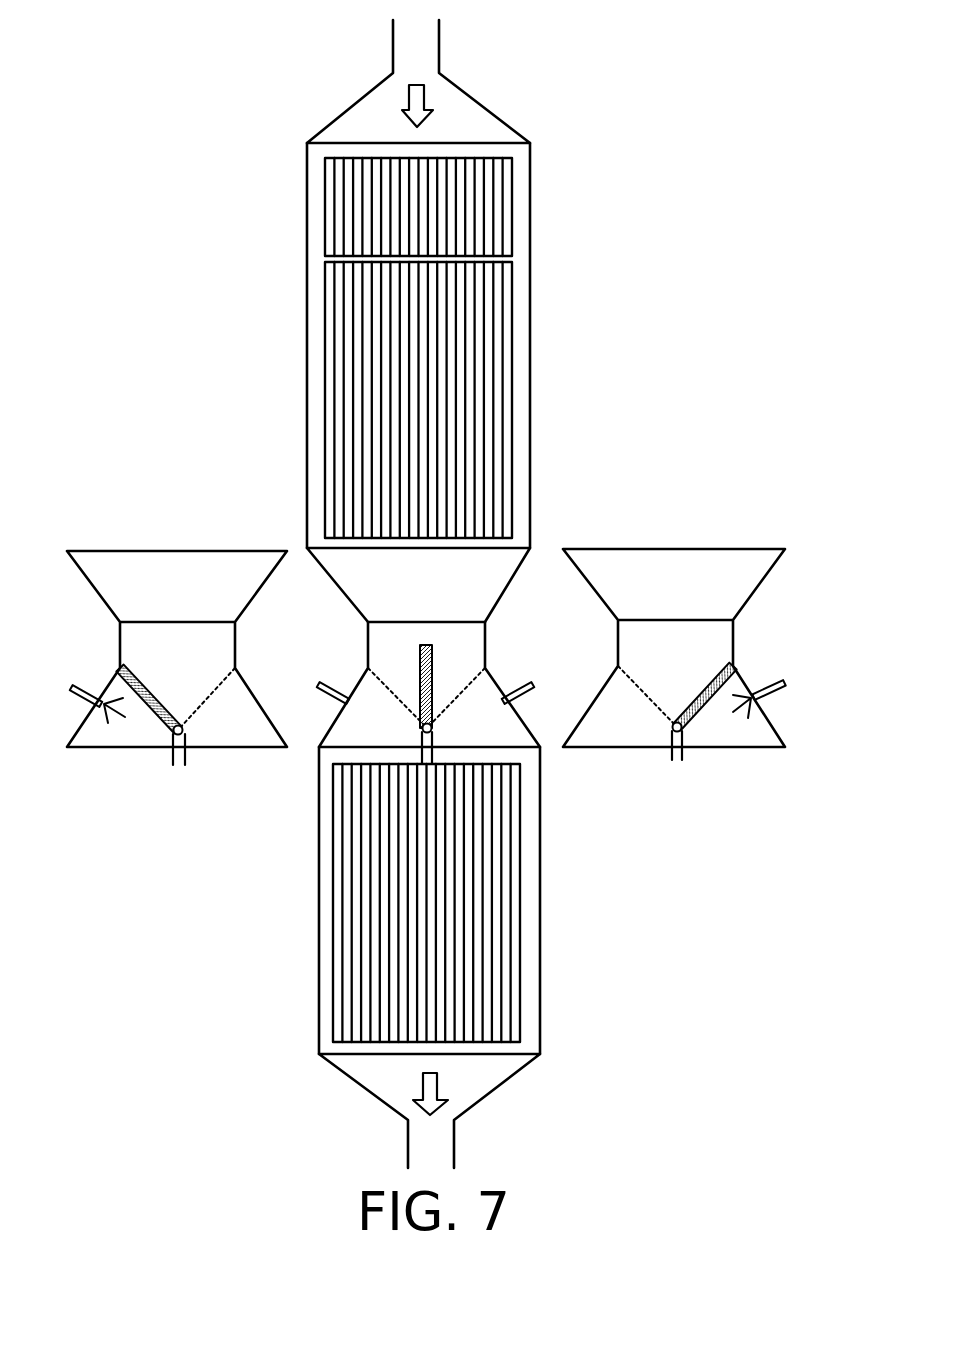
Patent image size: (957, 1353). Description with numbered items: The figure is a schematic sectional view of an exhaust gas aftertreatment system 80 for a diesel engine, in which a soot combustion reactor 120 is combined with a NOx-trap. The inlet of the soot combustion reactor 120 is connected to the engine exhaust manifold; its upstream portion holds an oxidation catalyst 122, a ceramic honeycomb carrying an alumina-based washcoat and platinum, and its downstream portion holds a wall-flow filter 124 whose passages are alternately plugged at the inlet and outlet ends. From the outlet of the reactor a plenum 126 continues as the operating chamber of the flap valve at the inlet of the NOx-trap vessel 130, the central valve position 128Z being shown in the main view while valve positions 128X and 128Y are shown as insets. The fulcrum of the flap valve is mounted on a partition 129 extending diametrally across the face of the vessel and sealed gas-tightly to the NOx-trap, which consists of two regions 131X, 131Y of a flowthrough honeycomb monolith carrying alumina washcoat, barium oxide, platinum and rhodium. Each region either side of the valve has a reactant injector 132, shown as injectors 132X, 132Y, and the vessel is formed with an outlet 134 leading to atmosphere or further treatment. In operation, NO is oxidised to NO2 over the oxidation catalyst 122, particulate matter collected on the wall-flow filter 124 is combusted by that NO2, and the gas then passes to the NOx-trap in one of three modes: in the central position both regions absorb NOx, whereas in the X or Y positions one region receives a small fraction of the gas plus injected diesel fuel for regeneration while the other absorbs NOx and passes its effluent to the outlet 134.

The exhaust gas aftertreatment system 80 is at (682, 218).
The soot combustion reactor 120 is at (487, 102).
The oxidation catalyst 122 is at (505, 199).
The wall-flow filter 124 is at (508, 404).
The plenum 126 is at (450, 599).
The flap valve position X 128X is at (214, 599).
The flap valve position Y 128Y is at (709, 597).
The flap valve central position Z 128Z is at (380, 635).
The partition 129 is at (173, 762).
The NOx-trap vessel 130 is at (517, 862).
The NOx-trap region X 131X is at (367, 967).
The NOx-trap region Y 131Y is at (492, 967).
The reactant injector 132 is at (332, 686).
The reactant injector X 132X is at (84, 686).
The reactant injector Y 132Y is at (773, 683).
The outlet 134 is at (454, 1138).